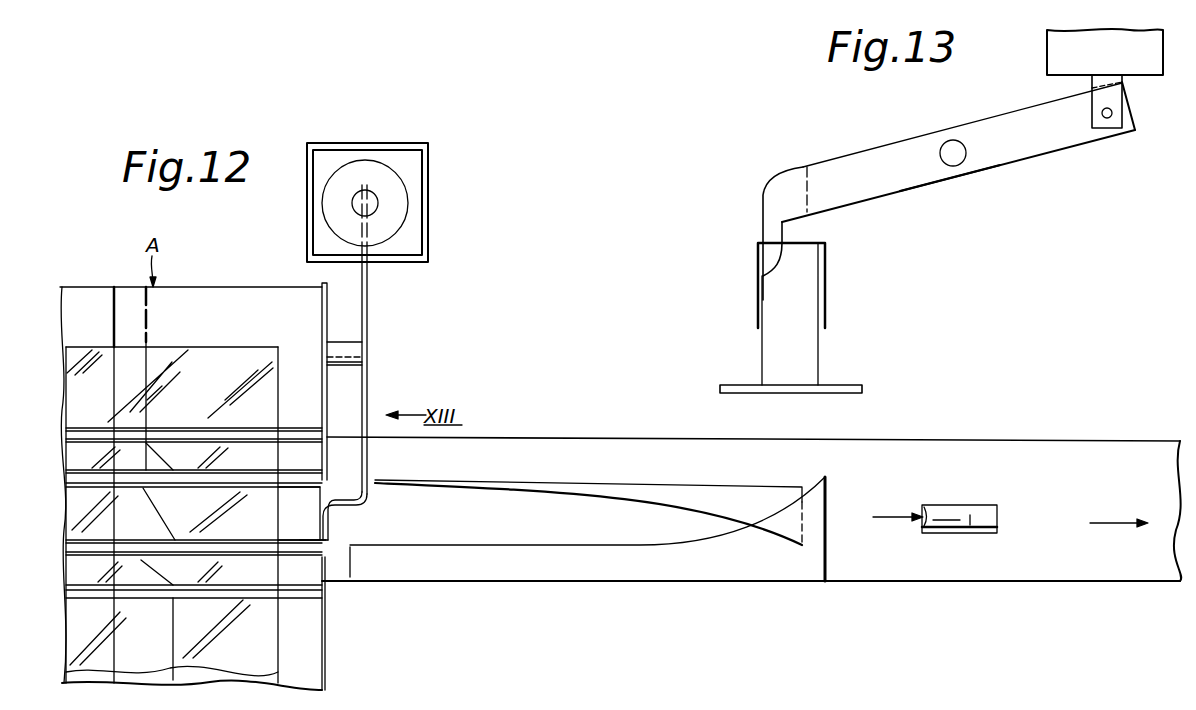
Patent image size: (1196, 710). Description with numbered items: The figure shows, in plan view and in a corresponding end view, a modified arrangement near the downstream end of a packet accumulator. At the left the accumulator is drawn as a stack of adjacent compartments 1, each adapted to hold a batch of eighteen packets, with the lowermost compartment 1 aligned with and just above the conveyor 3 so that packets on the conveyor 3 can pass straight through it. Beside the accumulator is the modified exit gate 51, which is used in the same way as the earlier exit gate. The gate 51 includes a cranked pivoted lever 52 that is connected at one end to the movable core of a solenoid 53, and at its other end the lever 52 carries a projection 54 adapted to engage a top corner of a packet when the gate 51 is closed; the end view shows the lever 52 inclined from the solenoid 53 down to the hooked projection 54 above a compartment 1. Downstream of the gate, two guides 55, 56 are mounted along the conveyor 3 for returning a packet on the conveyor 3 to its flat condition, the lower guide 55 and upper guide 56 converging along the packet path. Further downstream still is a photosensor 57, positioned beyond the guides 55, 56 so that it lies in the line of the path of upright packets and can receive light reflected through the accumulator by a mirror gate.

In FIG. 12, the compartment 1 is at (70, 442).
In FIG. 13, the compartment 1 is at (826, 298).
In FIG. 12, the conveyor 3 is at (983, 462).
In FIG. 12, the exit gate 51 is at (368, 355).
In FIG. 13, the exit gate 51 is at (962, 180).
In FIG. 12, the cranked pivoted lever 52 is at (367, 404).
In FIG. 13, the cranked pivoted lever 52 is at (893, 150).
In FIG. 12, the solenoid 53 is at (407, 193).
In FIG. 13, the solenoid 53 is at (1060, 58).
In FIG. 12, the projection 54 is at (327, 527).
In FIG. 13, the projection 54 is at (768, 255).
In FIG. 12, the guide 55 is at (744, 553).
In FIG. 12, the guide 56 is at (770, 497).
In FIG. 12, the photosensor 57 is at (968, 520).